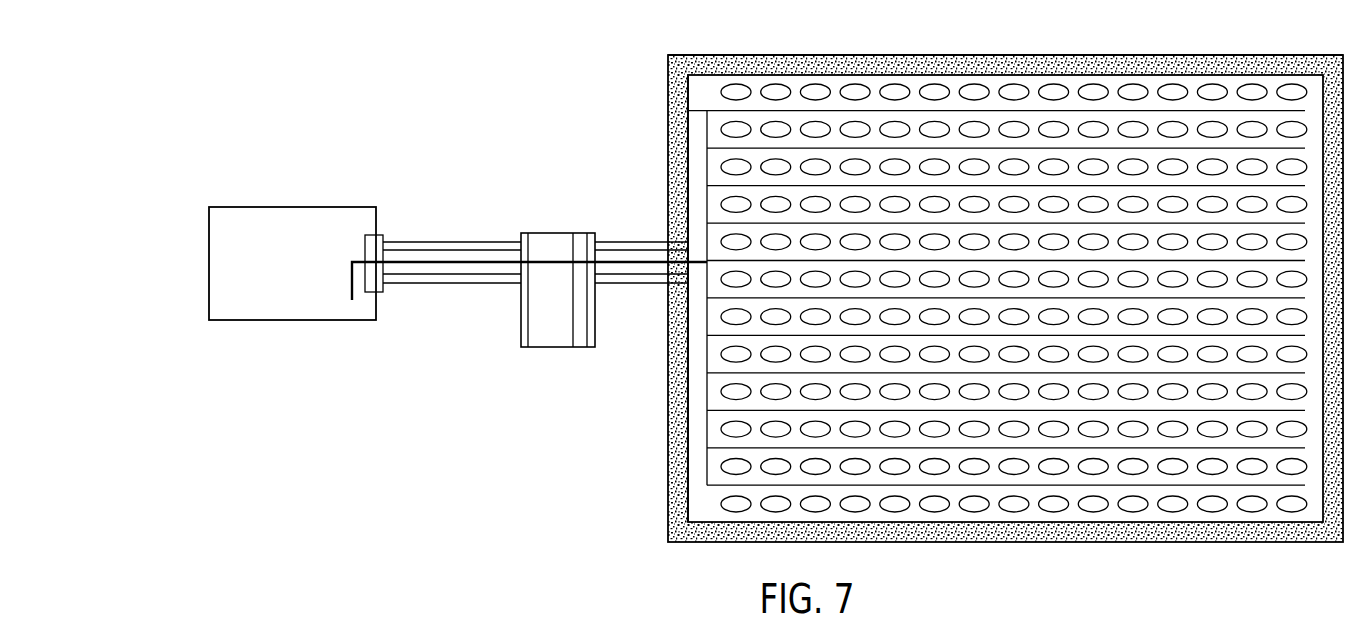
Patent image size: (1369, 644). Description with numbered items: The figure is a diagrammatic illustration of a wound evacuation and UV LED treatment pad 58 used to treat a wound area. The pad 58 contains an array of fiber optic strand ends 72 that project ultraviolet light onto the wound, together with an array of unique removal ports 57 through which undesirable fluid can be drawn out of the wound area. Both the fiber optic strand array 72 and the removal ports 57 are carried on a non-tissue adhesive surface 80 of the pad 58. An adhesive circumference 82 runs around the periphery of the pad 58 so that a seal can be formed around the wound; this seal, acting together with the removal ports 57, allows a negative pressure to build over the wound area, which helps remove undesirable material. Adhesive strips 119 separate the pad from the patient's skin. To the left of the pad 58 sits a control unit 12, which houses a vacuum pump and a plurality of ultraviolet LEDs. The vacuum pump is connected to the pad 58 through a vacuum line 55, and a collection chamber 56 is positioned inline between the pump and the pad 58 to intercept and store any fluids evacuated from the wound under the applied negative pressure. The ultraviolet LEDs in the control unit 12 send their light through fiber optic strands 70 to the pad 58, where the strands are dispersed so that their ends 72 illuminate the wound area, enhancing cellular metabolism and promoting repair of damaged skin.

The control unit 12 is at (286, 206).
The vacuum line 55 is at (458, 241).
The collection chamber 56 is at (551, 348).
The removal ports 57 is at (770, 92).
The wound evacuation and UV LED treatment pad 58 is at (1130, 50).
The fiber optic strands 70 is at (442, 281).
The fiber optic strand ends 72 is at (672, 95).
The non-tissue adhesive surface 80 is at (706, 95).
The adhesive circumference 82 is at (887, 53).
The adhesive strips 119 is at (1012, 53).